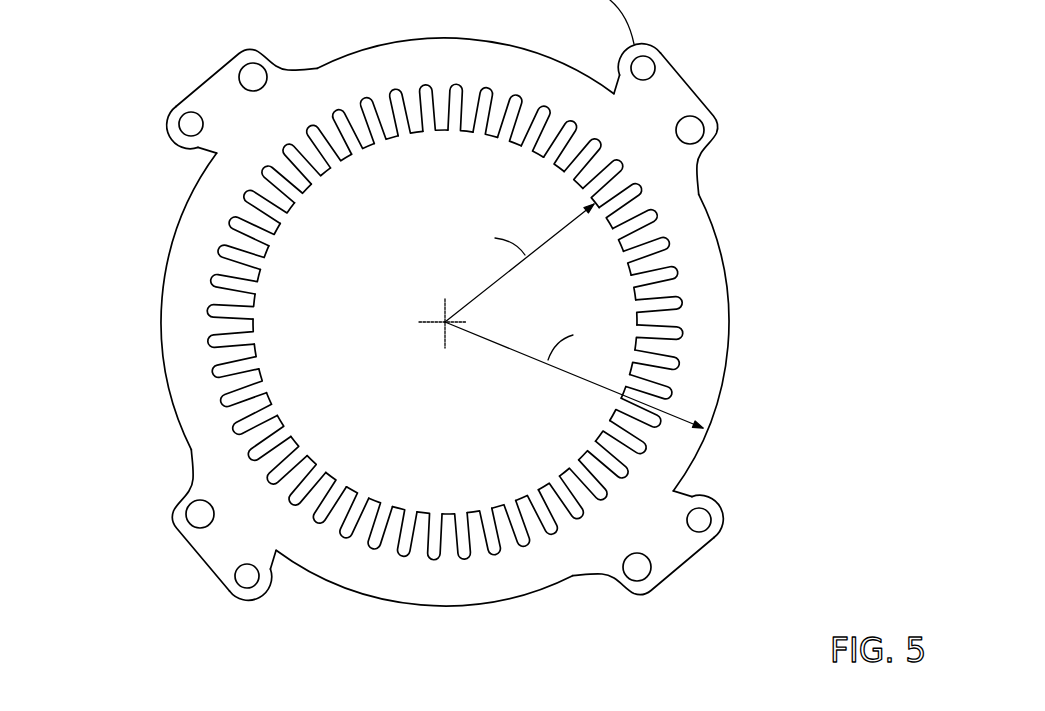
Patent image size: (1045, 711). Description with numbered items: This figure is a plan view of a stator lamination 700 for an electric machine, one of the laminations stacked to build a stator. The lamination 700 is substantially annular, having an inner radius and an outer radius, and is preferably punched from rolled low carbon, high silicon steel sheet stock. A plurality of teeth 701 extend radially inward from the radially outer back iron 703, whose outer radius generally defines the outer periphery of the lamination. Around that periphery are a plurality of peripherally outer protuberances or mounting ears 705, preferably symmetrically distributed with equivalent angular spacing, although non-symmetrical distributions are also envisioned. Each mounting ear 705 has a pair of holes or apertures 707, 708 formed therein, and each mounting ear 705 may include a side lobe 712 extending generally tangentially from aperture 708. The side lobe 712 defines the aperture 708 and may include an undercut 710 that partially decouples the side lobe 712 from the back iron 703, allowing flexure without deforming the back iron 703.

The stator lamination 700 is at (138, 350).
The teeth 701 is at (262, 372).
The back iron 703 is at (697, 248).
The mounting ear 705 is at (207, 75).
The aperture 707 is at (262, 70).
The aperture 708 is at (170, 136).
The undercut 710 is at (202, 157).
The side lobe 712 is at (170, 120).